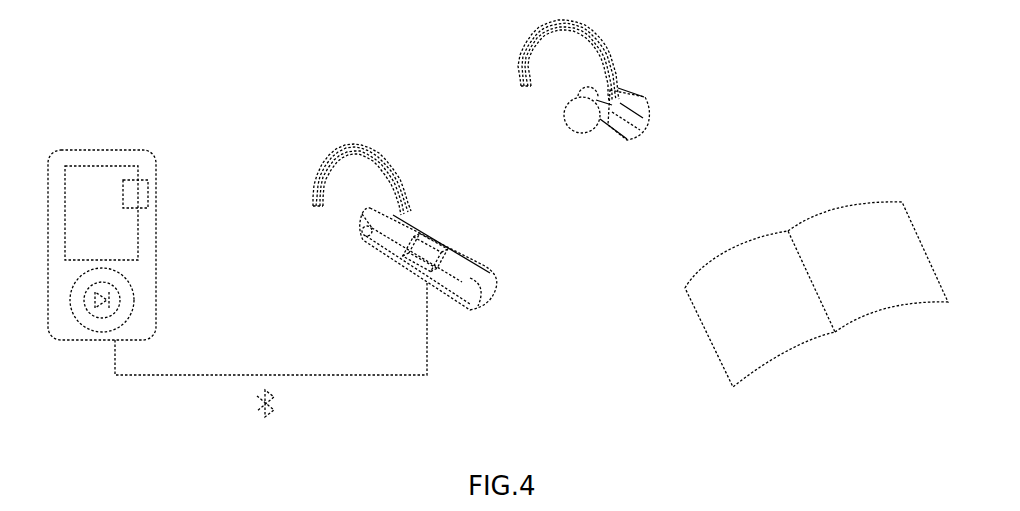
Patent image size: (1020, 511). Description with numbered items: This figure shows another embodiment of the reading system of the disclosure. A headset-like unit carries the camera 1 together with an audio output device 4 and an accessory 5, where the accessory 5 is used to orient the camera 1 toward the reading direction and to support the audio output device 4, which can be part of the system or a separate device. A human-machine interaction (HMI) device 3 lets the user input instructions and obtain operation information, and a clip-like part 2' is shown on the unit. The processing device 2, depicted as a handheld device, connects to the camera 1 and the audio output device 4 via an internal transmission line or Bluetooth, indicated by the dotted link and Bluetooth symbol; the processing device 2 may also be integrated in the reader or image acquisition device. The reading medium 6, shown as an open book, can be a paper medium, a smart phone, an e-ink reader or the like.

The camera 1 is at (497, 293).
The processing device 2 is at (137, 223).
The clip 2' is at (390, 275).
The human-machine interaction (HMI) device 3 is at (365, 245).
The audio output device 4 is at (418, 213).
The accessory 5 is at (522, 80).
The reading medium 6 is at (766, 315).